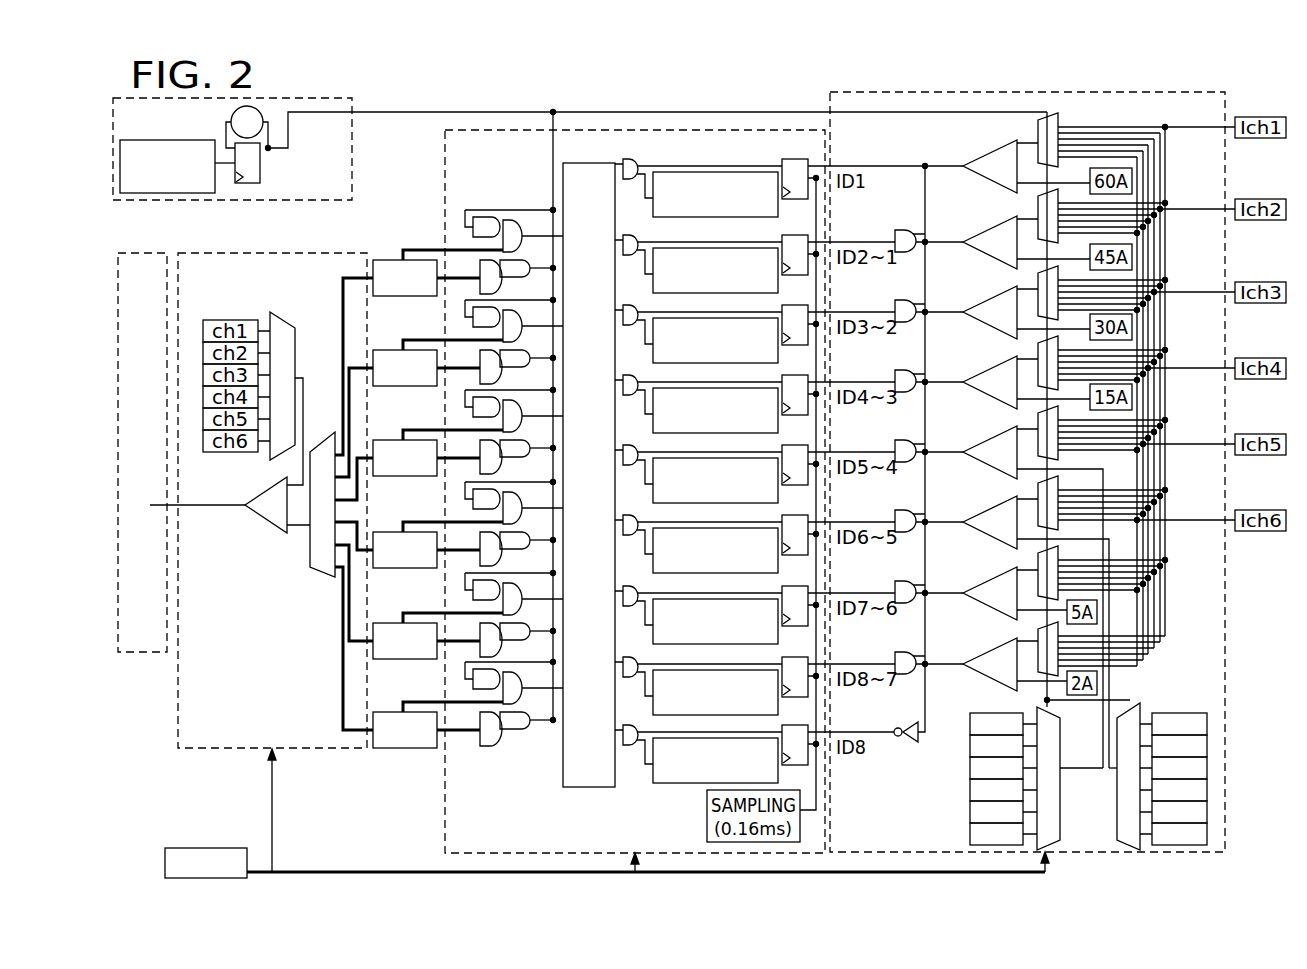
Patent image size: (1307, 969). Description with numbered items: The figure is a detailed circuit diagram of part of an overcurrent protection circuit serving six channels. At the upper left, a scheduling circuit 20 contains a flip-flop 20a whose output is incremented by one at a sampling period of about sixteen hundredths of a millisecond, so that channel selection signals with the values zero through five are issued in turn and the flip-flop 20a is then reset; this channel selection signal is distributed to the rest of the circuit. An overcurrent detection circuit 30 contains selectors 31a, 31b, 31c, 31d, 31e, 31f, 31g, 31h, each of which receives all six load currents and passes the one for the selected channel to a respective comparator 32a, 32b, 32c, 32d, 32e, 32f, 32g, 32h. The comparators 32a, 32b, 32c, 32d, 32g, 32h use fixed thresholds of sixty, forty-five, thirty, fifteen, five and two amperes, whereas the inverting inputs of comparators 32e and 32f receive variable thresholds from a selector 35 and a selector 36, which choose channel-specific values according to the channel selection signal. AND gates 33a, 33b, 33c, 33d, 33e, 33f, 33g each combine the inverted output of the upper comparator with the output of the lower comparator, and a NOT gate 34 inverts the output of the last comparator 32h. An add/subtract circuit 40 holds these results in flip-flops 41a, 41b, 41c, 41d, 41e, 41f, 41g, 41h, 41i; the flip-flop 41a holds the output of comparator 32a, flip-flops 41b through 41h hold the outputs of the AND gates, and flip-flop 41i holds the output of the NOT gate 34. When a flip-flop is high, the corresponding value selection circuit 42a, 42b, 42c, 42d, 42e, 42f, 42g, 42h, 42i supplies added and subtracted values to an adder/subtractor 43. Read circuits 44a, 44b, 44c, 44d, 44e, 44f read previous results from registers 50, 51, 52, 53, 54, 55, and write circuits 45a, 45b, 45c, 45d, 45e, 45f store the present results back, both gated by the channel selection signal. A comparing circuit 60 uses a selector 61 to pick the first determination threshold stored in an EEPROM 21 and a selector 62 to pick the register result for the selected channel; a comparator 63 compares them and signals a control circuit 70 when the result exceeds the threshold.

The scheduling circuit 20 is at (352, 110).
The flip-flop 20a is at (262, 184).
The EEPROM 21 is at (180, 848).
The overcurrent detection circuit 30 is at (1232, 100).
The selector 31a is at (1037, 122).
The selector 31b is at (1037, 198).
The selector 31c is at (1037, 275).
The selector 31d is at (1037, 345).
The selector 31e is at (1037, 415).
The selector 31f is at (1037, 485).
The selector 31g is at (1037, 555).
The selector 31h is at (1037, 631).
The comparator 32a is at (984, 147).
The comparator 32b is at (984, 223).
The comparator 32c is at (984, 293).
The comparator 32d is at (984, 363).
The comparator 32e is at (984, 433).
The comparator 32f is at (984, 503).
The comparator 32g is at (984, 574).
The comparator 32h is at (984, 645).
The AND gate 33a is at (906, 253).
The AND gate 33b is at (906, 323).
The AND gate 33c is at (906, 393).
The AND gate 33d is at (906, 463).
The AND gate 33e is at (906, 533).
The AND gate 33f is at (906, 604).
The AND gate 33g is at (906, 675).
The NOT gate 34 is at (908, 744).
The selector 35 is at (1062, 806).
The selector 36 is at (1140, 700).
The add/subtract circuit 40 is at (646, 128).
The flip-flop 41a is at (782, 159).
The flip-flop 41b is at (782, 235).
The flip-flop 41c is at (782, 305).
The flip-flop 41d is at (782, 375).
The flip-flop 41e is at (782, 445).
The flip-flop 41f is at (782, 515).
The flip-flop 41g is at (782, 586).
The flip-flop 41h is at (782, 657).
The flip-flop 41i is at (782, 725).
The value selection circuit 42a is at (631, 180).
The value selection circuit 42b is at (631, 256).
The value selection circuit 42c is at (631, 326).
The value selection circuit 42d is at (631, 396).
The value selection circuit 42e is at (631, 466).
The value selection circuit 42f is at (631, 536).
The value selection circuit 42g is at (631, 607).
The value selection circuit 42h is at (631, 678).
The value selection circuit 42i is at (631, 746).
The adder/subtractor 43 is at (586, 789).
The read circuit 44a is at (503, 245).
The read circuit 44b is at (503, 335).
The read circuit 44c is at (503, 425).
The read circuit 44d is at (503, 517).
The read circuit 44e is at (503, 608).
The read circuit 44f is at (503, 697).
The write circuit 45a is at (502, 286).
The write circuit 45b is at (502, 376).
The write circuit 45c is at (502, 466).
The write circuit 45d is at (502, 558).
The write circuit 45e is at (502, 649).
The write circuit 45f is at (502, 738).
The register 50 is at (386, 259).
The register 51 is at (386, 349).
The register 52 is at (386, 439).
The register 53 is at (386, 531).
The register 54 is at (386, 622).
The register 55 is at (386, 711).
The comparing circuit 60 is at (303, 750).
The selector 61 is at (284, 314).
The selector 62 is at (320, 578).
The comparator 63 is at (258, 523).
The control circuit 70 is at (150, 655).